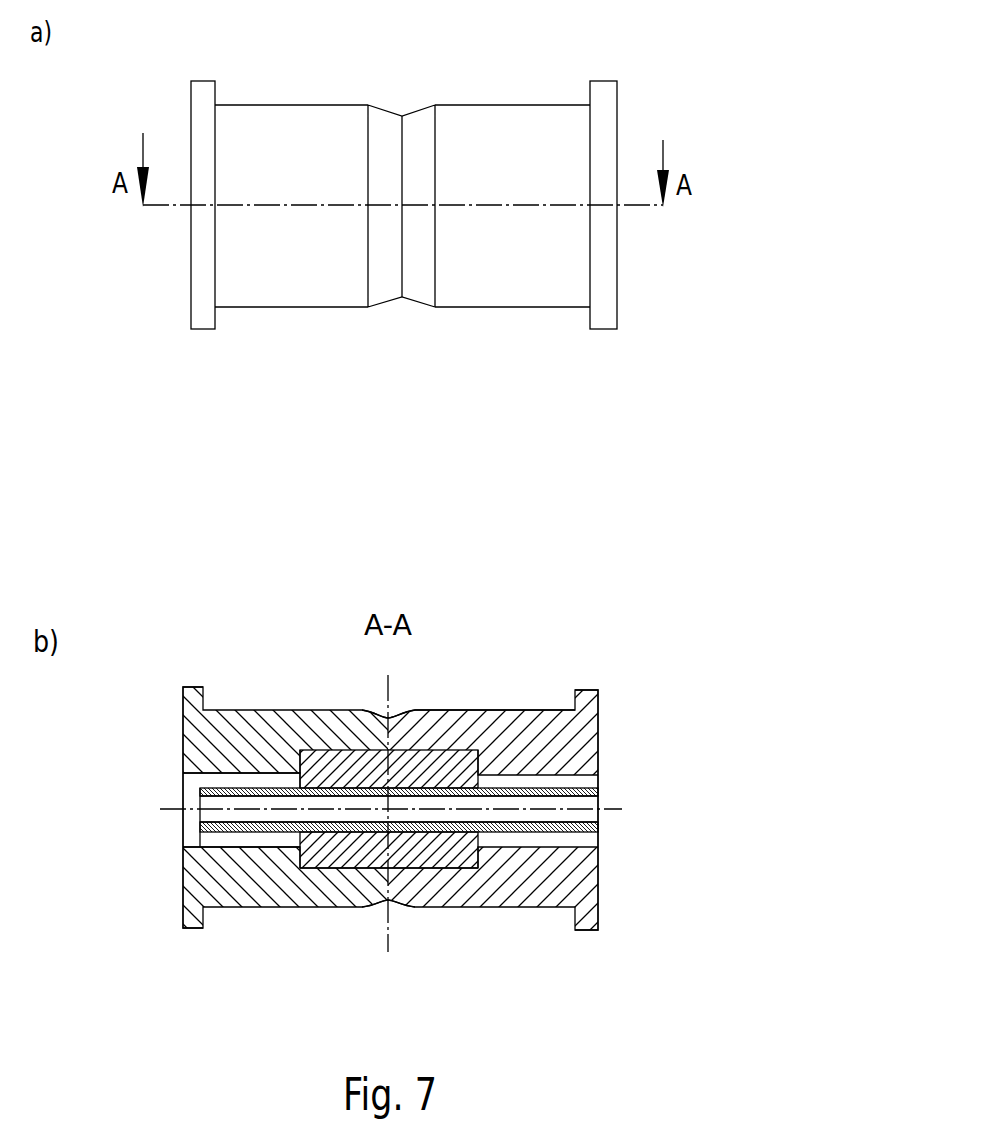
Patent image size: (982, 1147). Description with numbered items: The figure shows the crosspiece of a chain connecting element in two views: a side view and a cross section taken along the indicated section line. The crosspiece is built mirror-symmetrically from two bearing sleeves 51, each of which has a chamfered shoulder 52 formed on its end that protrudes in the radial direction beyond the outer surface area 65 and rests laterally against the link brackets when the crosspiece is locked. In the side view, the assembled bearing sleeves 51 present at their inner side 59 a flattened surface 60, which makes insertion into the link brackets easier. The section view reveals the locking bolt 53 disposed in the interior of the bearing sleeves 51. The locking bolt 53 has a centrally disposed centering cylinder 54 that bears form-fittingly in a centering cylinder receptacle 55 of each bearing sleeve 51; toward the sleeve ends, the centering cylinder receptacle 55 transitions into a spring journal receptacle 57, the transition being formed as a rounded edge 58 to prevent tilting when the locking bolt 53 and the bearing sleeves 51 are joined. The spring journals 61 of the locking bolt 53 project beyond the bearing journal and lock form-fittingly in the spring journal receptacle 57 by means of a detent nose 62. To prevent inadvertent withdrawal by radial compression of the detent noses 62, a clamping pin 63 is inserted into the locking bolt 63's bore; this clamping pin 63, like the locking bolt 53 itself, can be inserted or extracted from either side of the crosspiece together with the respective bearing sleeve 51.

The bearing sleeve 51 is at (230, 727).
The chamfered shoulder 52 is at (595, 684).
The locking bolt 53 is at (353, 748).
The centering cylinder 54 is at (423, 853).
The centering cylinder receptacle 55 is at (338, 867).
The spring journal receptacle 57 is at (268, 823).
The rounded edge 58 is at (309, 765).
The inner side 59 is at (410, 168).
The flattened surface 60 is at (418, 275).
The spring journal 61 is at (198, 838).
The detent nose 62 is at (201, 768).
The clamping pin 63 is at (540, 798).
The outer surface area 65 is at (492, 710).